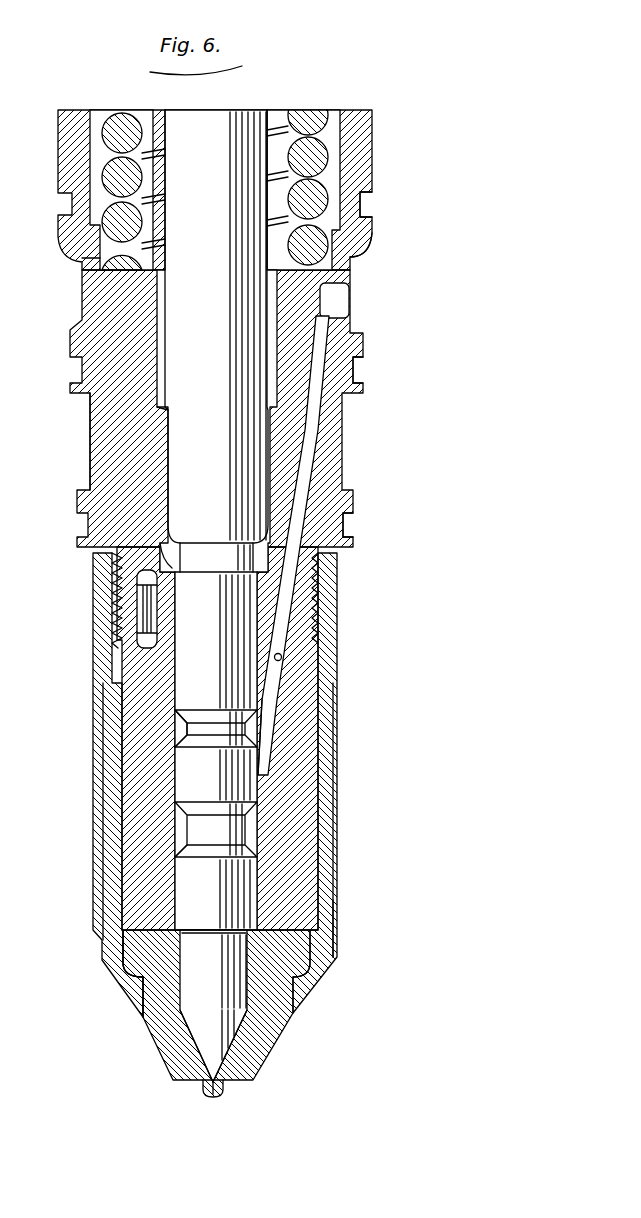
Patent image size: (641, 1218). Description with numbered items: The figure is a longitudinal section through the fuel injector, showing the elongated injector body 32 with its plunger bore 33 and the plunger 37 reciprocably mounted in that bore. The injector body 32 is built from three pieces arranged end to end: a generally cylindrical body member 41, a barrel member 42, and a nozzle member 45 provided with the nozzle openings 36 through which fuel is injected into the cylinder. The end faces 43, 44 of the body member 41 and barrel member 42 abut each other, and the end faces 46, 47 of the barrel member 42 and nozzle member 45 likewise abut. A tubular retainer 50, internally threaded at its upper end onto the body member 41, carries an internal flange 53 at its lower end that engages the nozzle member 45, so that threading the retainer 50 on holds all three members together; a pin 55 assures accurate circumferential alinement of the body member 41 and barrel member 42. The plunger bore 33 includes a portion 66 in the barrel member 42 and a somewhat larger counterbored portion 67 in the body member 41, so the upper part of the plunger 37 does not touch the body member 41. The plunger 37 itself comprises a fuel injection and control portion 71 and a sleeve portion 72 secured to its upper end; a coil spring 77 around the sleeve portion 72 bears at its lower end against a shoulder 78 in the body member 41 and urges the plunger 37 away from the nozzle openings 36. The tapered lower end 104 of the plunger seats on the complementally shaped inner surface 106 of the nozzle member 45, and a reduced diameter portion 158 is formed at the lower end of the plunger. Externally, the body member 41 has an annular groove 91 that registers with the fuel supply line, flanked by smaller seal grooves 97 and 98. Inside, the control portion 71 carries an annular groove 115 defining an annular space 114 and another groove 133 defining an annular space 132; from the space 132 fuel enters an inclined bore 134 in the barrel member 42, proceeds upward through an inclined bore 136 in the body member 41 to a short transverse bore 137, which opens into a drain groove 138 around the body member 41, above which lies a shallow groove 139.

The injector body 32 is at (380, 135).
The coil spring 77 is at (318, 115).
The sleeve portion 72 is at (222, 186).
The shallow groove 139 is at (363, 216).
The shoulder 78 is at (100, 262).
The groove 138 is at (355, 266).
The body member 41 is at (93, 293).
The transverse bore 137 is at (352, 300).
The groove 98 is at (363, 372).
The external annular groove 91 is at (90, 441).
The inclined bore 136 is at (310, 456).
The plunger 37 is at (174, 568).
The groove 97 is at (357, 532).
The pin 55 is at (140, 600).
The end face 44 is at (320, 600).
The end face 43 is at (112, 640).
The bore portion 67 is at (228, 612).
The plunger bore 33 is at (177, 667).
The inclined bore 134 is at (282, 658).
The tubular retainer 50 is at (110, 742).
The annular space 132 is at (174, 740).
The groove 133 is at (230, 783).
The fuel injection and control portion 71 is at (258, 778).
The barrel member 42 is at (130, 805).
The annular space 114 is at (182, 832).
The annular groove 115 is at (182, 848).
The bore portion 66 is at (183, 903).
The end face 47 is at (322, 908).
The end face 46 is at (142, 938).
The reduced diameter portion 158 is at (225, 985).
The internal flange 53 is at (140, 978).
The tapered lower end 104 is at (240, 1022).
The inner surface 106 is at (236, 1046).
The nozzle member 45 is at (168, 1048).
The nozzle openings 36 is at (210, 1092).